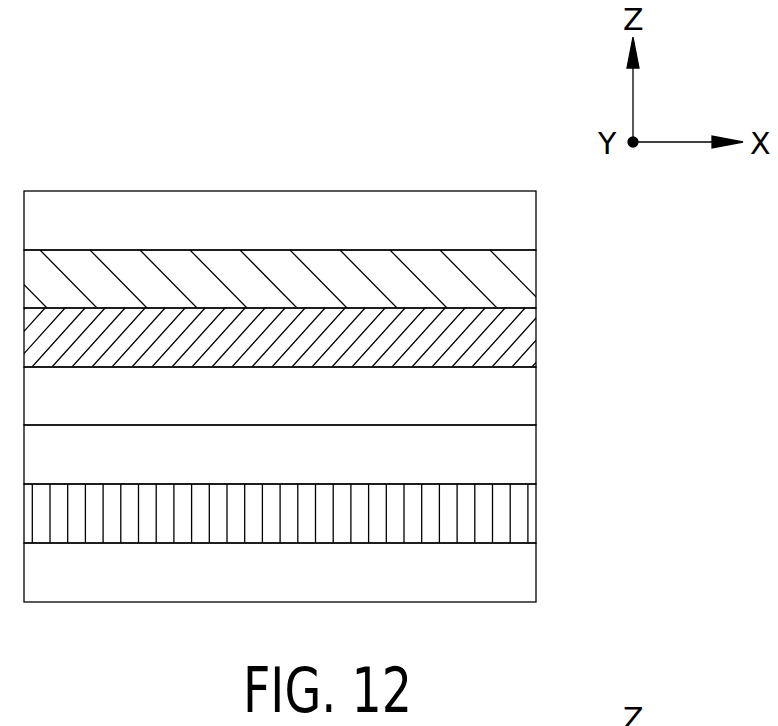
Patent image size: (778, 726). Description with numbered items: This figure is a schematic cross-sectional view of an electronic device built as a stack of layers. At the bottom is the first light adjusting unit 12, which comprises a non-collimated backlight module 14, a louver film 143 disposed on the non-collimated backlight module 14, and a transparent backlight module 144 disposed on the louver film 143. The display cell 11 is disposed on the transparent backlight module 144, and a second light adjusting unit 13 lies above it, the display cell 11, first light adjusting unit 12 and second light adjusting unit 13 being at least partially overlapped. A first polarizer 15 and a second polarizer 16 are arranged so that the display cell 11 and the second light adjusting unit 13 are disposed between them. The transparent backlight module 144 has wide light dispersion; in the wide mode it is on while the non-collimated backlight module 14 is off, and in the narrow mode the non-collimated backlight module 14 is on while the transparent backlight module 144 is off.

The second polarizer 16 is at (536, 219).
The second light adjusting unit 13 is at (536, 277).
The display cell 11 is at (536, 339).
The first polarizer 15 is at (536, 395).
The transparent backlight module 144 is at (536, 453).
The louver film 143 is at (536, 513).
The non-collimated backlight module 14 is at (324, 572).
The first light adjusting unit 12 is at (359, 513).